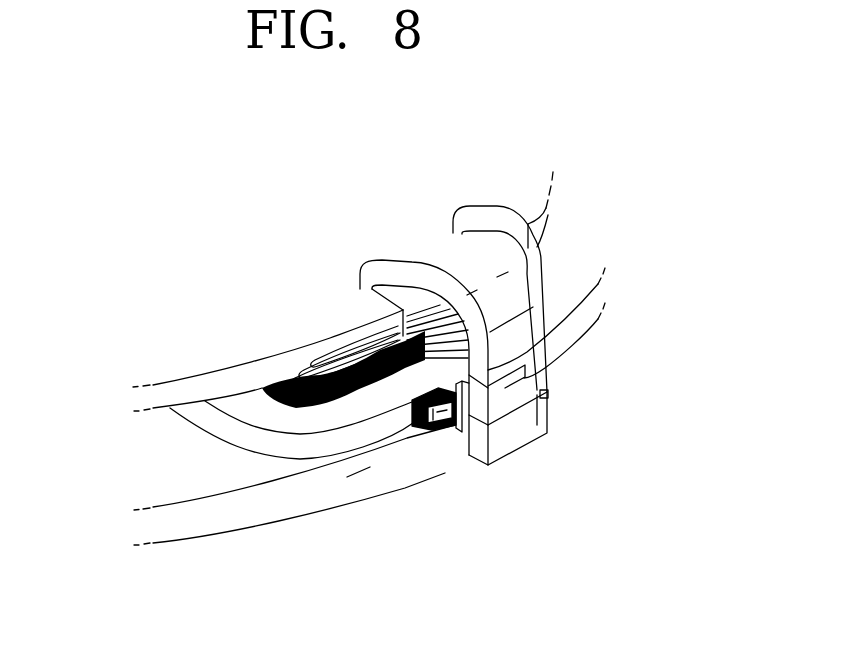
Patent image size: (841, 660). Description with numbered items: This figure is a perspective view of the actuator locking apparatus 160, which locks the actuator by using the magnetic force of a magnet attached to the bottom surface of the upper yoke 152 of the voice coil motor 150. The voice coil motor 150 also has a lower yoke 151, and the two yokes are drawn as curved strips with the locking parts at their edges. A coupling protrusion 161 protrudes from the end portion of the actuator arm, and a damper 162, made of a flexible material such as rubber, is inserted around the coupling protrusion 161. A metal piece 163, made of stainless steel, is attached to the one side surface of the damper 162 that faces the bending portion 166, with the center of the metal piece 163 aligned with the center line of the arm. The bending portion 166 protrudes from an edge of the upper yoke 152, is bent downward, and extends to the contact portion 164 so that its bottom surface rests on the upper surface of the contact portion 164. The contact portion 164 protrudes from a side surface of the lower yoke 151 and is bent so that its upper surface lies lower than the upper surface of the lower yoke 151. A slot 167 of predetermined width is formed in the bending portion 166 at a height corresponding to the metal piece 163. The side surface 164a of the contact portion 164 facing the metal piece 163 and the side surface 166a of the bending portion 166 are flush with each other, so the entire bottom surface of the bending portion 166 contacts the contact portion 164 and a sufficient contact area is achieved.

The voice coil motor 150 is at (222, 347).
The lower yoke 151 is at (577, 325).
The upper yoke 152 is at (545, 222).
The actuator locking apparatus 160 is at (521, 384).
The coupling protrusion 161 is at (444, 425).
The damper 162 is at (418, 425).
The metal piece 163 is at (460, 428).
The contact portion 164 is at (535, 422).
The side surface of the contact portion 164a is at (484, 400).
The bending portion 166 is at (523, 328).
The side surface of the bending portion 166a is at (537, 425).
The slot 167 is at (548, 396).